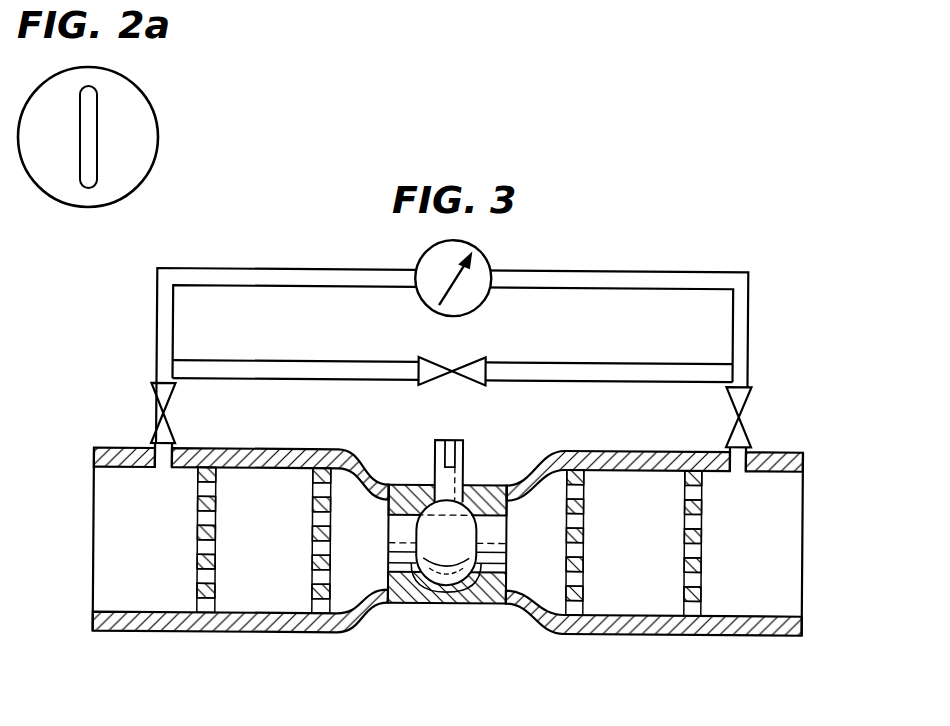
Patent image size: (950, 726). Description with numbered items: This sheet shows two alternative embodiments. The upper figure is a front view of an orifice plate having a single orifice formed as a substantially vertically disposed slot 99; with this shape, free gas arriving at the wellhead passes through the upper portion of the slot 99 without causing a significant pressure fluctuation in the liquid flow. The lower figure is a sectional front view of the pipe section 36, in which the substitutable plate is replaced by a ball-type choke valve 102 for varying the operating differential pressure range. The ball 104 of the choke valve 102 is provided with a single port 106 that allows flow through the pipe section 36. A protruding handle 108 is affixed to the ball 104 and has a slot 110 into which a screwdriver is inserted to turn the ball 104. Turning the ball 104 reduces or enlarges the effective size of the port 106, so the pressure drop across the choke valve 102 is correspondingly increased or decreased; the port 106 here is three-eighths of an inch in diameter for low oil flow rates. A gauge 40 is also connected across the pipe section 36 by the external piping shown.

In FIG. 3, the pipe section 36 is at (162, 632).
In FIG. 3, the pressure gauge 40 is at (487, 262).
In FIG. 2a, the slot 99 is at (97, 112).
In FIG. 3, the ball-type choke valve 102 is at (410, 601).
In FIG. 3, the ball 104 is at (447, 586).
In FIG. 3, the port 106 is at (476, 580).
In FIG. 3, the protruding handle 108 is at (464, 462).
In FIG. 3, the slot 110 is at (446, 437).